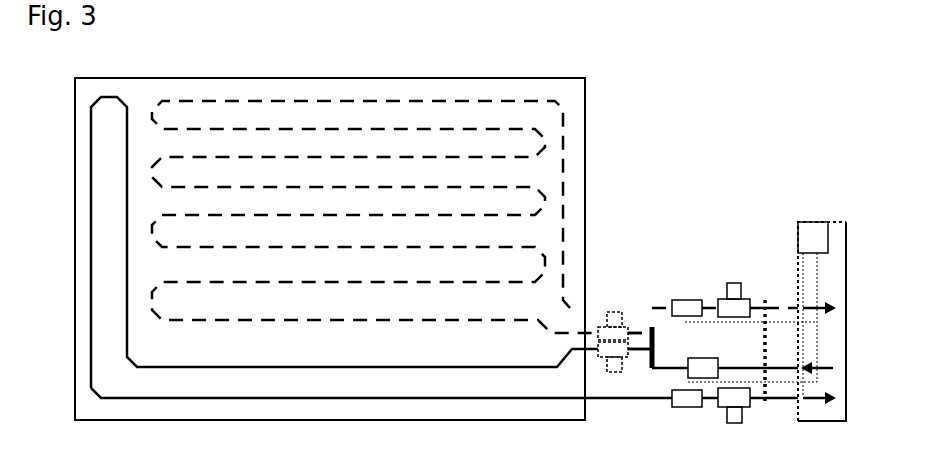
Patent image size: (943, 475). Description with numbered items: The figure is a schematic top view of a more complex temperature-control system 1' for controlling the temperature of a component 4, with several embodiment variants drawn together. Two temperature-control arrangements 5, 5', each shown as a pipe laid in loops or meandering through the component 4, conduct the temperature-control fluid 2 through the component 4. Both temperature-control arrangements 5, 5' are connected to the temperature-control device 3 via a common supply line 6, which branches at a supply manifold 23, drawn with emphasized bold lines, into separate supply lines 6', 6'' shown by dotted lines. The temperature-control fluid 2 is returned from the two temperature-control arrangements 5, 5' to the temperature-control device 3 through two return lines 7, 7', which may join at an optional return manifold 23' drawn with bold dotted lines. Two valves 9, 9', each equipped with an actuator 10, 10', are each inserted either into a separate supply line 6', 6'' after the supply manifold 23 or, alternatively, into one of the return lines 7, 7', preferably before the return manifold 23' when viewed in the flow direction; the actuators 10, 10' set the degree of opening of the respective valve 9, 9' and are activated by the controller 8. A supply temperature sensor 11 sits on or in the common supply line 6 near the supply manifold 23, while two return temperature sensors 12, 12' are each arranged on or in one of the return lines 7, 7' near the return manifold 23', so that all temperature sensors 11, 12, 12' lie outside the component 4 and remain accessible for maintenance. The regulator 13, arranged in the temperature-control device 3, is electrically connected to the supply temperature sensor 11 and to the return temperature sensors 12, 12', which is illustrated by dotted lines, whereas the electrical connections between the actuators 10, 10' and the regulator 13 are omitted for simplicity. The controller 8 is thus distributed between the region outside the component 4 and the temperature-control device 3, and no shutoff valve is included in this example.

The more complex temperature-control system 1' is at (436, 249).
The temperature-control fluid 2 is at (822, 303).
The temperature-control device 3 is at (822, 343).
The component 4 is at (469, 150).
The temperature-control arrangement 5 is at (381, 247).
The temperature-control arrangement 5' is at (402, 232).
The common supply line 6 is at (670, 344).
The separate supply line 6' is at (651, 406).
The separate supply line 6'' is at (638, 398).
The return line 7 is at (756, 415).
The return line 7' is at (725, 277).
The controller 8 is at (732, 227).
The valve 9 is at (682, 402).
The valve 9' is at (659, 305).
The actuator 10 is at (683, 410).
The actuator 10' is at (681, 287).
The supply temperature sensor 11 is at (700, 362).
The return temperature sensor 12 is at (689, 426).
The return temperature sensor 12' is at (687, 281).
The regulator 13 is at (804, 249).
The supply manifold 23 is at (653, 307).
The return manifold 23' is at (773, 313).